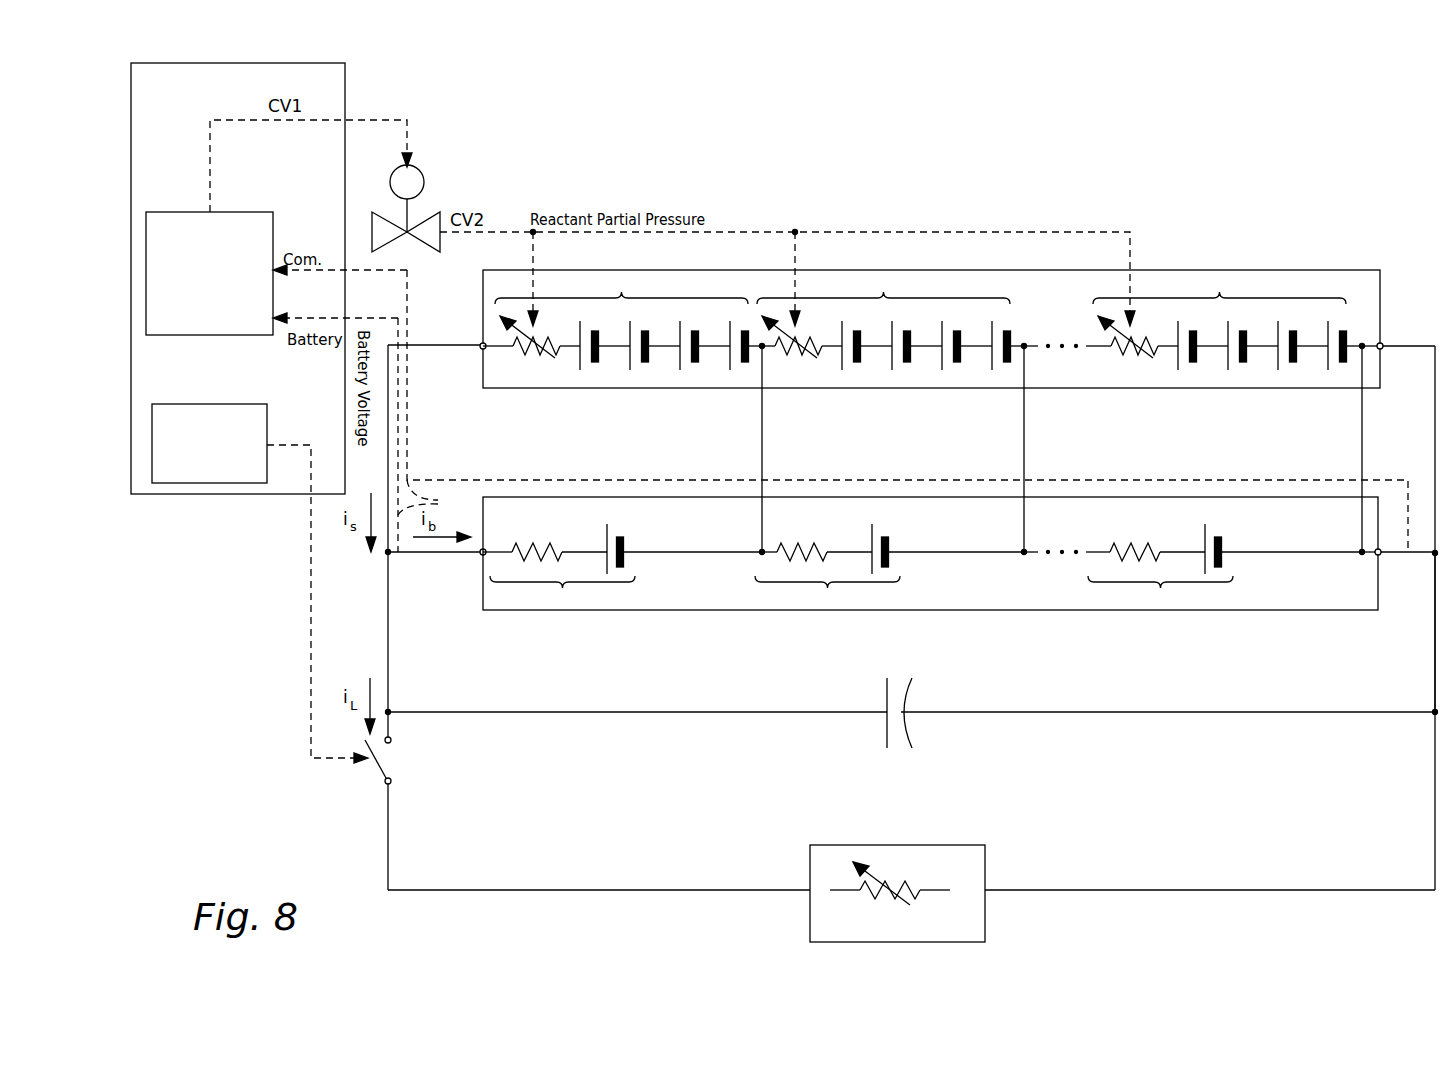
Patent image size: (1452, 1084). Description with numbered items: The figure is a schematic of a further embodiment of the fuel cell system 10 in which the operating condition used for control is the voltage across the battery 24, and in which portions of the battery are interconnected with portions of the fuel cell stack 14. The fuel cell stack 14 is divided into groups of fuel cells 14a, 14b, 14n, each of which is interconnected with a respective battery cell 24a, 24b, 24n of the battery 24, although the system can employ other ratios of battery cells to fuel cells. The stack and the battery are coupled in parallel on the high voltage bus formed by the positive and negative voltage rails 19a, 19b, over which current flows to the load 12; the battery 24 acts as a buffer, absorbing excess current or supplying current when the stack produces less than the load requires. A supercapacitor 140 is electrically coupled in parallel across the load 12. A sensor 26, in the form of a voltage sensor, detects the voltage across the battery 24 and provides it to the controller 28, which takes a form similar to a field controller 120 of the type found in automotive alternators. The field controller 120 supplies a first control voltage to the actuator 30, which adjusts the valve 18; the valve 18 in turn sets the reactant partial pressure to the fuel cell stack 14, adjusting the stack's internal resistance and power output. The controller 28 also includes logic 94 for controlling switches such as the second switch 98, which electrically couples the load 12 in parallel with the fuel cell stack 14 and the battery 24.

The fuel cell system 10 is at (243, 725).
The load 12 is at (985, 865).
The fuel cell stack 14 is at (1287, 270).
The fuel cell stack portion 14a is at (622, 322).
The fuel cell stack portion 14b is at (890, 322).
The fuel cell stack portion 14n is at (1223, 322).
The valve 18 is at (372, 228).
The positive voltage rail 19a is at (388, 594).
The negative voltage rail 19b is at (1435, 660).
The battery 24 is at (1133, 612).
The battery cell 24a is at (622, 557).
The battery cell 24b is at (889, 557).
The battery cell 24n is at (1224, 557).
The sensor 26 is at (903, 411).
The controller 28 is at (345, 73).
The actuator 30 is at (424, 182).
The logic 94 is at (222, 404).
The second switch 98 is at (372, 765).
The field controller 120 is at (165, 212).
The supercapacitor 140 is at (905, 742).